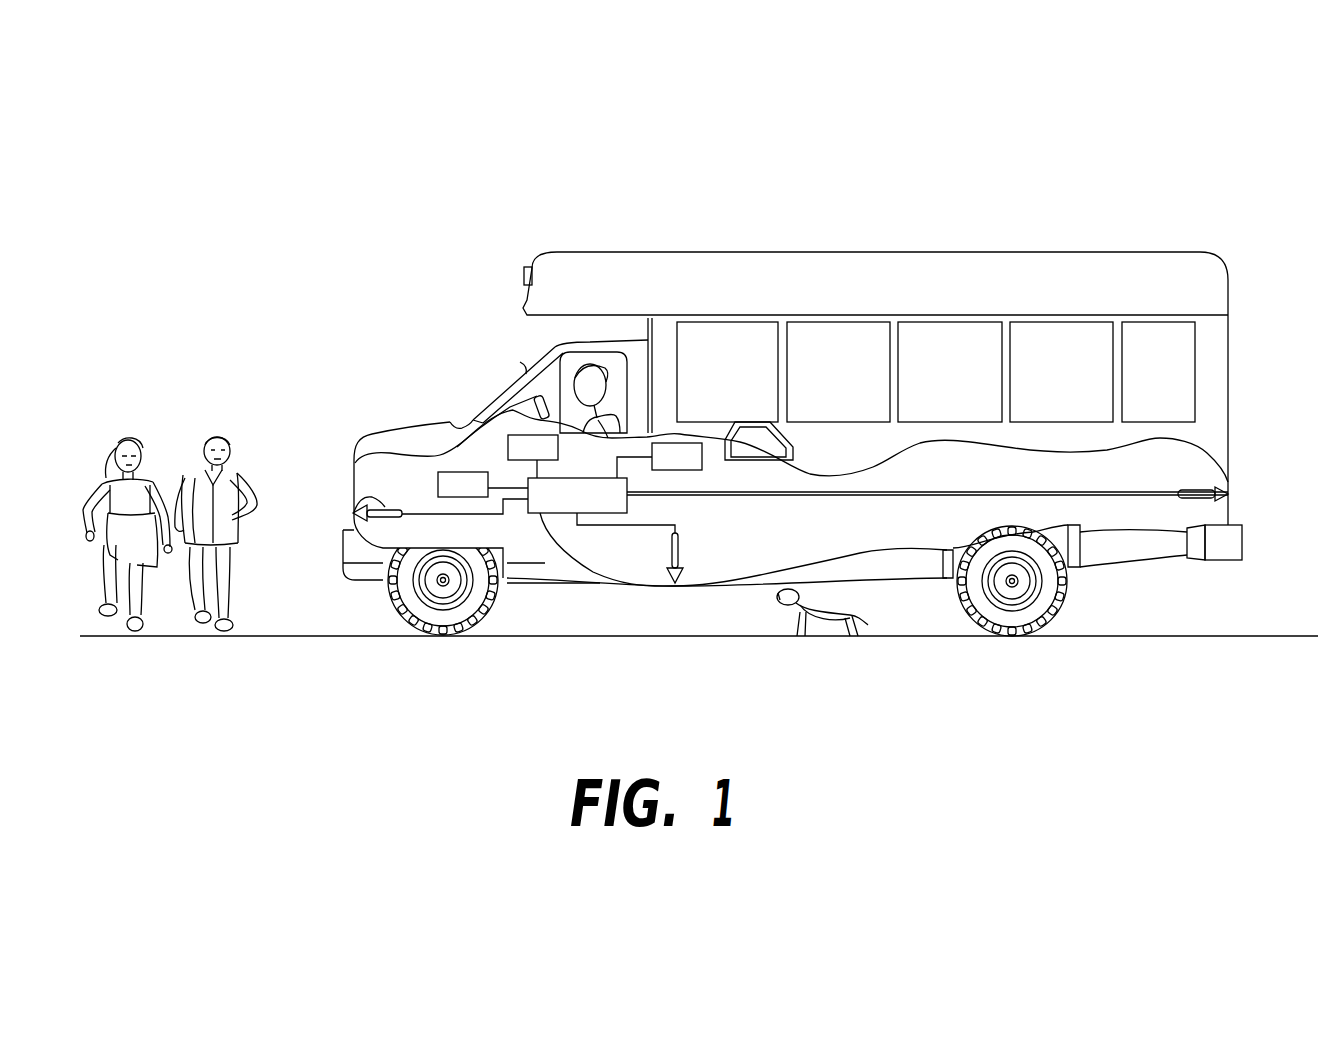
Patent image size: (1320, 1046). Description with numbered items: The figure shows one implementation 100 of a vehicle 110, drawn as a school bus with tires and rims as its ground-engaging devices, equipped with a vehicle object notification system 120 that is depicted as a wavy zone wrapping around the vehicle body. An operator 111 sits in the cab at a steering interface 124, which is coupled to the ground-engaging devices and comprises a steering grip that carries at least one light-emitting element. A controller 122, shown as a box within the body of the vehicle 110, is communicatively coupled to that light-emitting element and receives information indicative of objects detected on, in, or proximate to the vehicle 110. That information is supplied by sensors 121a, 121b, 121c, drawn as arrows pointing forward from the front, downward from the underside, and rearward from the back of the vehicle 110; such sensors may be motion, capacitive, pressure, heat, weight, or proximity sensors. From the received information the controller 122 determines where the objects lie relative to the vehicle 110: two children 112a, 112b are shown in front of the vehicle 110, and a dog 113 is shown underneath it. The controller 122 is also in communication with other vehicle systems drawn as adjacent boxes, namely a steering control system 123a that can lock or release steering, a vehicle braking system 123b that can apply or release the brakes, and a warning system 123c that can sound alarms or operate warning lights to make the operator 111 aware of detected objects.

The implementation 100 is at (462, 127).
The vehicle 110 is at (1214, 251).
The operator 111 is at (588, 362).
The child 112a is at (127, 437).
The child 112b is at (213, 432).
The dog 113 is at (795, 637).
The vehicle object notification system 120 is at (837, 466).
The sensor 121a is at (357, 512).
The sensor 121b is at (681, 548).
The sensor 121c is at (1203, 489).
The controller 122 is at (543, 513).
The steering control system 123a is at (522, 434).
The vehicle braking system 123b is at (450, 472).
The warning system 123c is at (680, 443).
The steering interface 124 is at (522, 365).